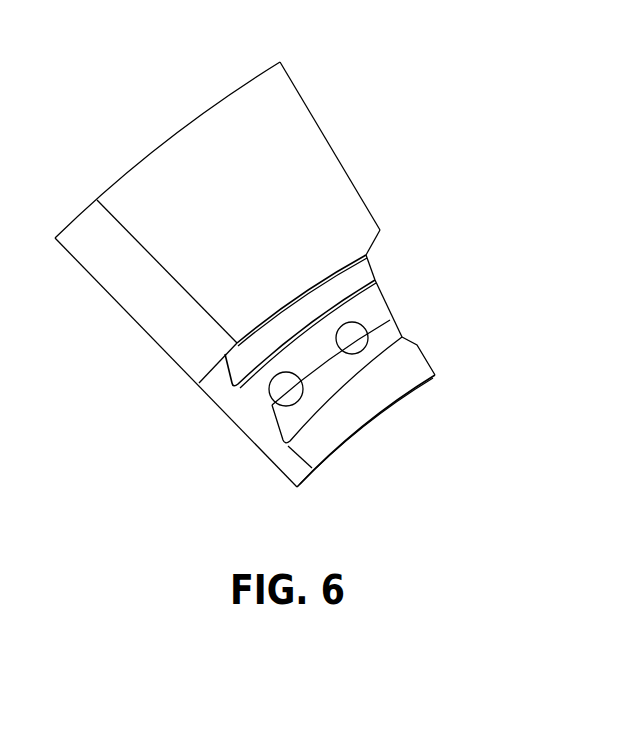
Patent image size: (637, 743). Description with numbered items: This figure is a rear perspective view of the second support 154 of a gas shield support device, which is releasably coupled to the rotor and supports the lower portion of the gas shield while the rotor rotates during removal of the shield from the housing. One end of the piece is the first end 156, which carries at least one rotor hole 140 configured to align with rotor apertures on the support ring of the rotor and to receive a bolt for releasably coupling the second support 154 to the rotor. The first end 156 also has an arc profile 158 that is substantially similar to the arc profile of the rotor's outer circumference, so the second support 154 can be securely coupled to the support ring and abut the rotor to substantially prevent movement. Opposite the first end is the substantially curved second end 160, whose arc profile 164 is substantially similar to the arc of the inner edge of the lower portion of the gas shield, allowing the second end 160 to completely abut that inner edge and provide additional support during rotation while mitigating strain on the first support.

The rotor hole 140 is at (353, 344).
The second support 154 is at (127, 403).
The first end 156 is at (392, 389).
The arc profile 158 is at (390, 447).
The substantially curved second end 160 is at (260, 103).
The arc profile 164 is at (158, 138).